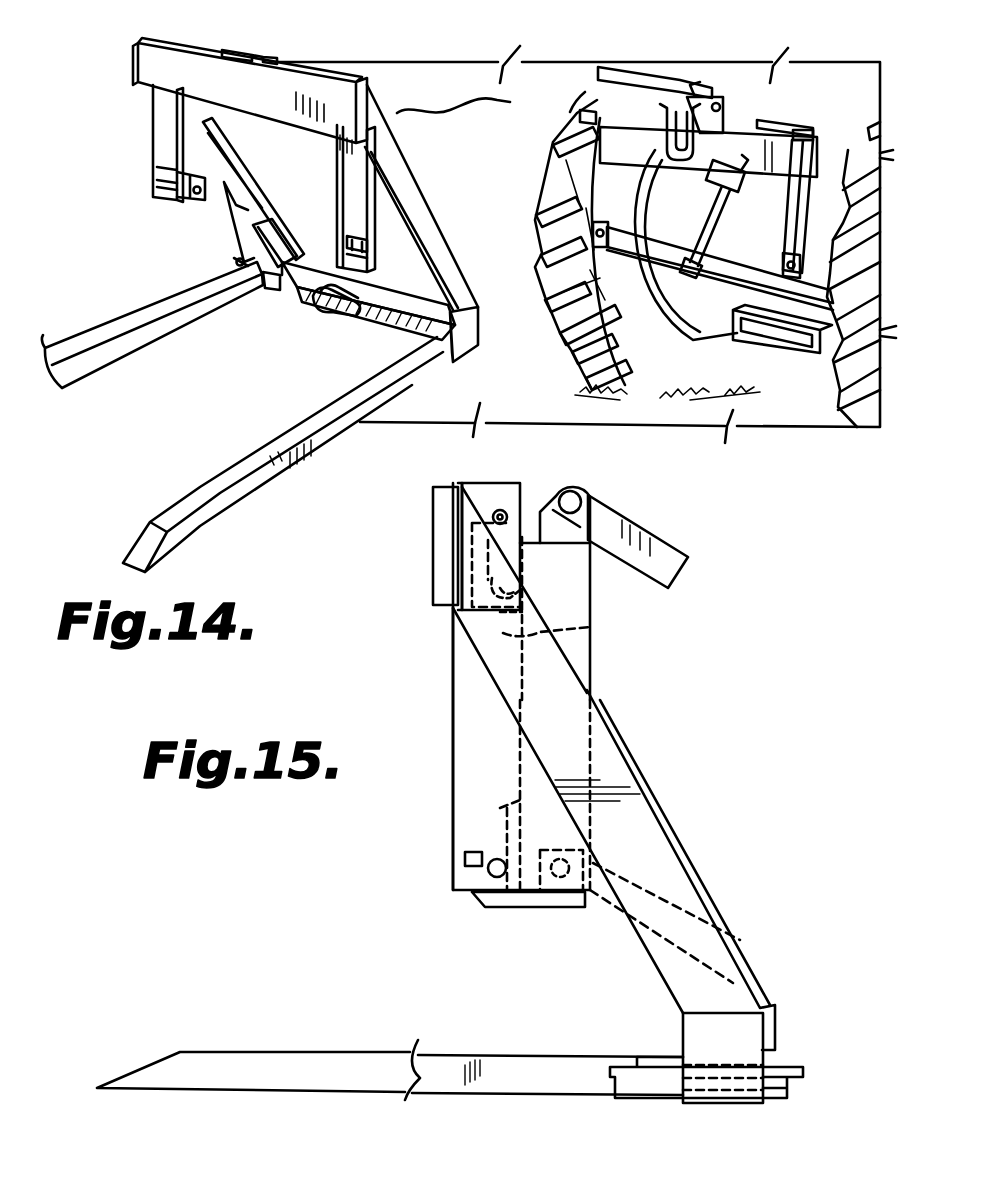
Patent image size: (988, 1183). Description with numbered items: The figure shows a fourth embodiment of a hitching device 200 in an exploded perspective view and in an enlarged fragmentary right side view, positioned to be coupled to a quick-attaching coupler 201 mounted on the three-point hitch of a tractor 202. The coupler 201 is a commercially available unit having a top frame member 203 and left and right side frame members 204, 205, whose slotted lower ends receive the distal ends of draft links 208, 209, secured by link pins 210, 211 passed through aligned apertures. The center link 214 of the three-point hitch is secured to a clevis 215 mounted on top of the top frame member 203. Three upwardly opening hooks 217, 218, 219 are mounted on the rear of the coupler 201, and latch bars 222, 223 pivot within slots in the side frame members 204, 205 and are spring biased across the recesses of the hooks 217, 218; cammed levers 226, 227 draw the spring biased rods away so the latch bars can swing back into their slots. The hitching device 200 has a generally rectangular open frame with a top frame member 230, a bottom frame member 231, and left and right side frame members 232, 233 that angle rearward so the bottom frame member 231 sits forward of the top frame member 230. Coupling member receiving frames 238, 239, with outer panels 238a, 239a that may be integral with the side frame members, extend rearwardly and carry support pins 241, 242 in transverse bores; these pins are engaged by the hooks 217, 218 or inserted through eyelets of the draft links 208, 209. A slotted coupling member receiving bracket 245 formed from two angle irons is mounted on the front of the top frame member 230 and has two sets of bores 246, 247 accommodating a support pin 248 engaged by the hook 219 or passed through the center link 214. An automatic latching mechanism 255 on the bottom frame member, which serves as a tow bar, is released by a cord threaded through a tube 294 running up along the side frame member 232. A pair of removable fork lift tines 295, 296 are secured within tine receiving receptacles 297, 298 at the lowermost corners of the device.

In FIG. 14, the hitching device 200 is at (120, 28).
In FIG. 14, the top frame member 230 is at (152, 43).
In FIG. 15, the top frame member 230 is at (433, 503).
In FIG. 14, the coupling member receiving bracket 245 is at (252, 52).
In FIG. 15, the coupling member receiving bracket 245 is at (520, 485).
In FIG. 15, the bores 246 is at (500, 510).
In FIG. 15, the bores 247 is at (528, 587).
In FIG. 15, the support pin 248 is at (590, 630).
In FIG. 14, the coupling member receiving frame 238 is at (177, 153).
In FIG. 14, the outer panel 238a is at (177, 165).
In FIG. 14, the support pin 241 is at (175, 195).
In FIG. 14, the tube 294 is at (212, 139).
In FIG. 15, the tube 294 is at (688, 853).
In FIG. 14, the left side frame member 232 is at (228, 214).
In FIG. 14, the coupling member receiving frame 239 is at (335, 163).
In FIG. 15, the coupling member receiving frame 239 is at (460, 748).
In FIG. 15, the outer panel 239a is at (453, 810).
In FIG. 14, the support pin 242 is at (346, 240).
In FIG. 15, the support pin 242 is at (487, 872).
In FIG. 14, the right side frame member 233 is at (402, 163).
In FIG. 15, the right side frame member 233 is at (473, 645).
In FIG. 14, the tine receiving receptacle 298 is at (462, 350).
In FIG. 14, the bottom frame member 231 is at (388, 333).
In FIG. 14, the automatic latching mechanism 255 is at (310, 304).
In FIG. 15, the automatic latching mechanism 255 is at (633, 1060).
In FIG. 14, the tine receiving receptacle 297 is at (238, 262).
In FIG. 14, the fork lift tine 295 is at (107, 320).
In FIG. 14, the fork lift tine 296 is at (428, 380).
In FIG. 15, the fork lift tine 296 is at (277, 1090).
In FIG. 14, the tractor 202 is at (833, 73).
In FIG. 14, the left side frame member 204 is at (557, 172).
In FIG. 14, the draft link 208 is at (660, 300).
In FIG. 14, the right side frame member 205 is at (870, 161).
In FIG. 14, the top frame member 203 is at (645, 156).
In FIG. 14, the hook 219 is at (604, 96).
In FIG. 15, the hook 219 is at (455, 565).
In FIG. 14, the cammed lever 226 is at (580, 115).
In FIG. 14, the clevis 215 is at (673, 67).
In FIG. 15, the clevis 215 is at (588, 490).
In FIG. 14, the center link 214 is at (720, 110).
In FIG. 15, the center link 214 is at (653, 530).
In FIG. 14, the cammed lever 227 is at (785, 122).
In FIG. 14, the quick-attaching coupler 201 is at (831, 134).
In FIG. 14, the latch bar 222 is at (612, 198).
In FIG. 14, the latch bar 223 is at (813, 234).
In FIG. 14, the hook 217 is at (543, 242).
In FIG. 14, the hook 218 is at (733, 295).
In FIG. 15, the hook 218 is at (483, 905).
In FIG. 14, the link pin 210 is at (610, 270).
In FIG. 14, the link pin 211 is at (801, 266).
In FIG. 14, the draft link 209 is at (765, 356).
In FIG. 15, the draft link 209 is at (746, 945).